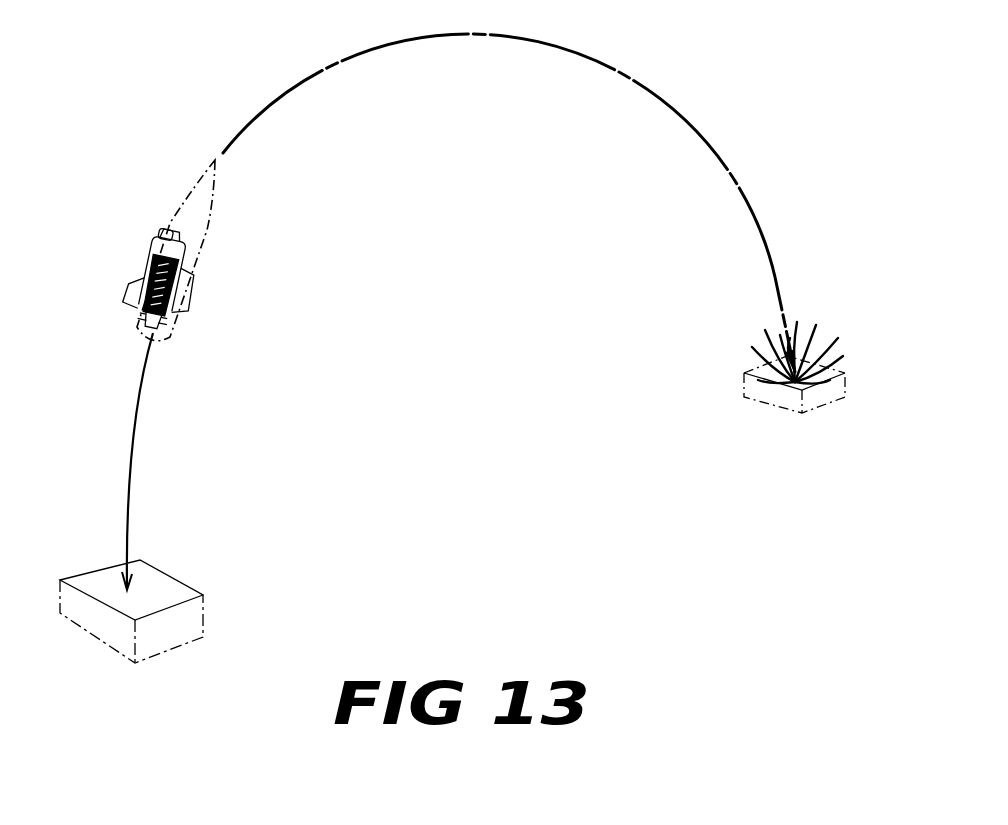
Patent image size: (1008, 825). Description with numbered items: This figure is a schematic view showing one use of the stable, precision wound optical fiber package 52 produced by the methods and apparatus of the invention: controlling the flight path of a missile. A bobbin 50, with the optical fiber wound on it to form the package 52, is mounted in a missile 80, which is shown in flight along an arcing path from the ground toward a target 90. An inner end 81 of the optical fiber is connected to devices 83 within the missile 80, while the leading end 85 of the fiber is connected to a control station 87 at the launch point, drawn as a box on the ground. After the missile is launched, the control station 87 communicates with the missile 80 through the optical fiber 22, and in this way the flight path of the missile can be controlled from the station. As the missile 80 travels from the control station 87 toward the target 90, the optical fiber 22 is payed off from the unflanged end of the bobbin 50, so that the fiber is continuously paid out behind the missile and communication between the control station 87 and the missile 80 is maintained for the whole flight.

The optical fiber 22 is at (129, 448).
The bobbin 50 is at (141, 279).
The precision wound optical fiber package 52 is at (139, 316).
The missile 80 is at (216, 191).
The inner end 81 is at (166, 234).
The devices 83 is at (164, 269).
The leading end 85 is at (127, 588).
The control station 87 is at (157, 578).
The target 90 is at (837, 367).